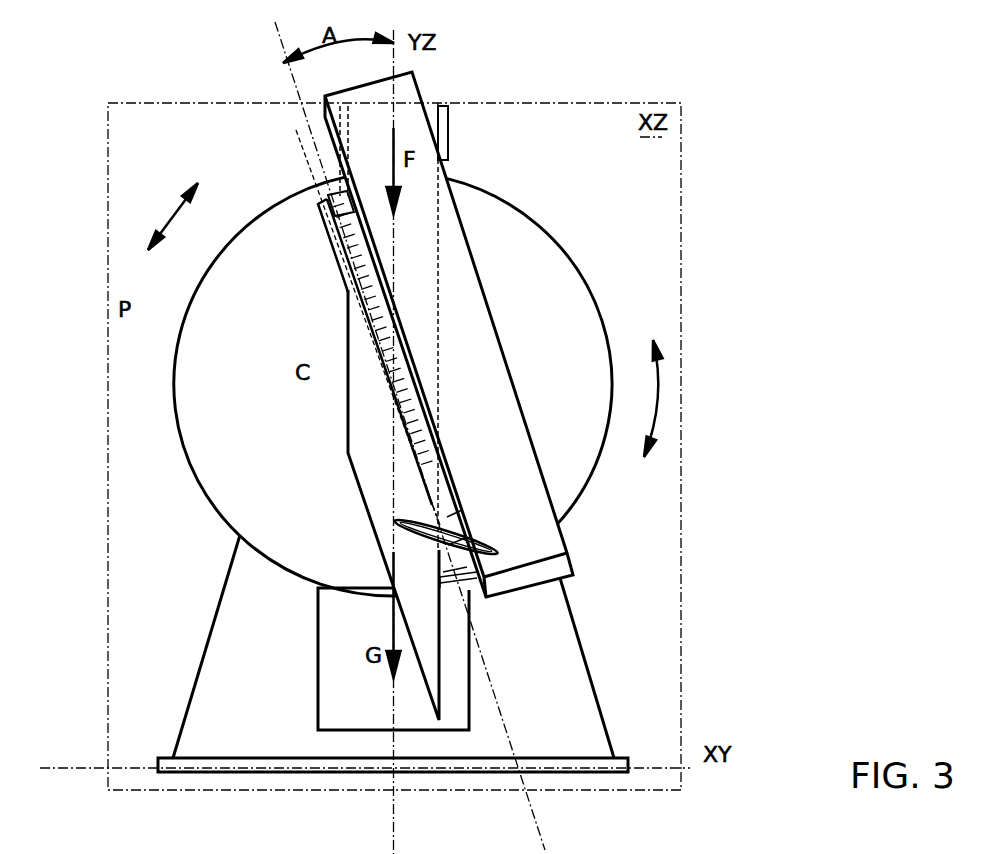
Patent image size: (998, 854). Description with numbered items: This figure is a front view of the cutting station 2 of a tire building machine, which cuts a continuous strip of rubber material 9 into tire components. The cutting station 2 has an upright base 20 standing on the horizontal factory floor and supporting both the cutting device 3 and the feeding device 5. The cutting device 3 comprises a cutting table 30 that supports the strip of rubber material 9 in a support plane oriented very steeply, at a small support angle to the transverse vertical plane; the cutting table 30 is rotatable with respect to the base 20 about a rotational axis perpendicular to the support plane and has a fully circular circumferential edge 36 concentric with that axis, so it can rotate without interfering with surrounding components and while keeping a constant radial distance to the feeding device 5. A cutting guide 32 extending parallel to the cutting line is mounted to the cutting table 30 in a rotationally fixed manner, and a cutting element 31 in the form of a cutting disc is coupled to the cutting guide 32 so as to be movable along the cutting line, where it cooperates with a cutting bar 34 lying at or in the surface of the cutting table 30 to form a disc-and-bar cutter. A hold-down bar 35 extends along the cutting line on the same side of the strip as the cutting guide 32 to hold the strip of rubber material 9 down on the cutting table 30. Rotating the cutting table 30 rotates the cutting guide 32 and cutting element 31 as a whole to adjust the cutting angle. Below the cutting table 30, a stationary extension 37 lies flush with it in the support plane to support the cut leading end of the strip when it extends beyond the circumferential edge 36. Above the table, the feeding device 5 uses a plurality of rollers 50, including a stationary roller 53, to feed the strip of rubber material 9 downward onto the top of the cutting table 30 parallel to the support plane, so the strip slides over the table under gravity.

The cutting station 2 is at (717, 168).
The cutting device 3 is at (376, 386).
The feeding device 5 is at (532, 133).
The rollers 50 is at (532, 133).
The stationary roller 53 is at (450, 130).
The strip of rubber material 9 is at (433, 108).
The base 20 is at (211, 669).
The cutting table 30 is at (363, 386).
The cutting element 31 is at (437, 530).
The cutting guide 32 is at (553, 537).
The cutting bar 34 is at (341, 246).
The hold-down bar 35 is at (338, 203).
The circular circumferential edge 36 is at (210, 507).
The stationary extension 37 is at (333, 687).